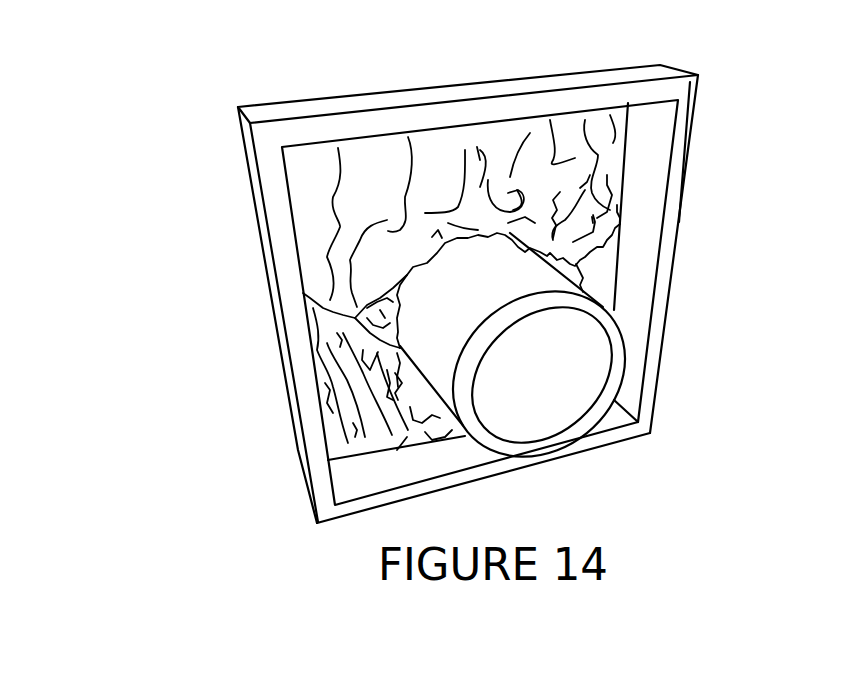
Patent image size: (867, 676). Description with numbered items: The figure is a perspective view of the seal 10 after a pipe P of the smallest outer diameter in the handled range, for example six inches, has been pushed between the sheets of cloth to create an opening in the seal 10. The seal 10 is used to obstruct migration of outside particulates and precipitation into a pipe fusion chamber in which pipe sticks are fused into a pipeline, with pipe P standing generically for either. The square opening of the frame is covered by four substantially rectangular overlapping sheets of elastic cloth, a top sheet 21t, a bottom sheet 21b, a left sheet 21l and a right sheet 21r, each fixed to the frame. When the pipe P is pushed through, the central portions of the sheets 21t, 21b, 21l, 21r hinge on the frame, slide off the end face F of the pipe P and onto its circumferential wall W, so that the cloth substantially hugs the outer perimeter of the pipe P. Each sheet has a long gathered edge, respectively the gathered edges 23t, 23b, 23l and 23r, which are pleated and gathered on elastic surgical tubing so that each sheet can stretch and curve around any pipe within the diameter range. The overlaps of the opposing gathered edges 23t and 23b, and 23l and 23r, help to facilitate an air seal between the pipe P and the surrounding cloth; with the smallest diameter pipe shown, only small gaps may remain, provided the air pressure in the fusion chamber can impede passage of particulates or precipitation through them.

The seal 10 is at (155, 95).
The pipe P is at (623, 375).
The circumferential wall W is at (528, 282).
The face F is at (608, 335).
The top sheet of cloth 21t is at (420, 143).
The bottom sheet of cloth 21b is at (405, 438).
The left sheet of cloth 21l is at (522, 285).
The right sheet of cloth 21r is at (400, 318).
The gathered edge of top sheet 23t is at (408, 278).
The gathered edge of bottom sheet 23b is at (333, 293).
The gathered edge of left sheet 23l is at (506, 252).
The gathered edge of right sheet 23r is at (387, 333).